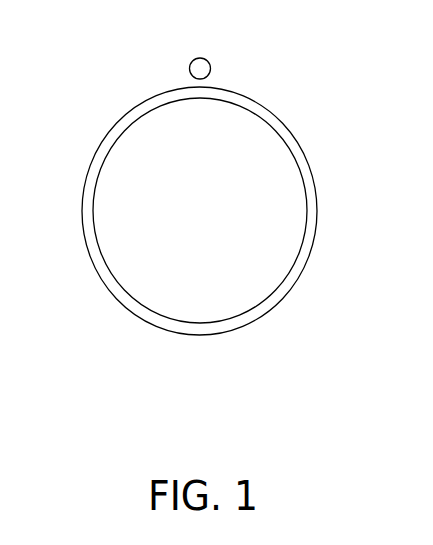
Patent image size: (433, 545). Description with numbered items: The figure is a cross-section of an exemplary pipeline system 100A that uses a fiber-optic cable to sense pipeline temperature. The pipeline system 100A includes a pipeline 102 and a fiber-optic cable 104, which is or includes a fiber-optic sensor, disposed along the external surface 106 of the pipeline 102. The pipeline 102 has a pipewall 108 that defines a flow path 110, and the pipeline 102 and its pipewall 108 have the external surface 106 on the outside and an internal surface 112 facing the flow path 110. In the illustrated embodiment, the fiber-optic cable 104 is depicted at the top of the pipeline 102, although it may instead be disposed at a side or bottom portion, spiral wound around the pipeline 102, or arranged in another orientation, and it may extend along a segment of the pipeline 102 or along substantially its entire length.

The pipeline system 100A is at (230, 459).
The pipeline 102 is at (221, 226).
The fiber-optic cable 104 is at (193, 60).
The external surface 106 is at (290, 137).
The pipewall 108 is at (311, 250).
The flow path 110 is at (132, 268).
The internal surface 112 is at (303, 182).